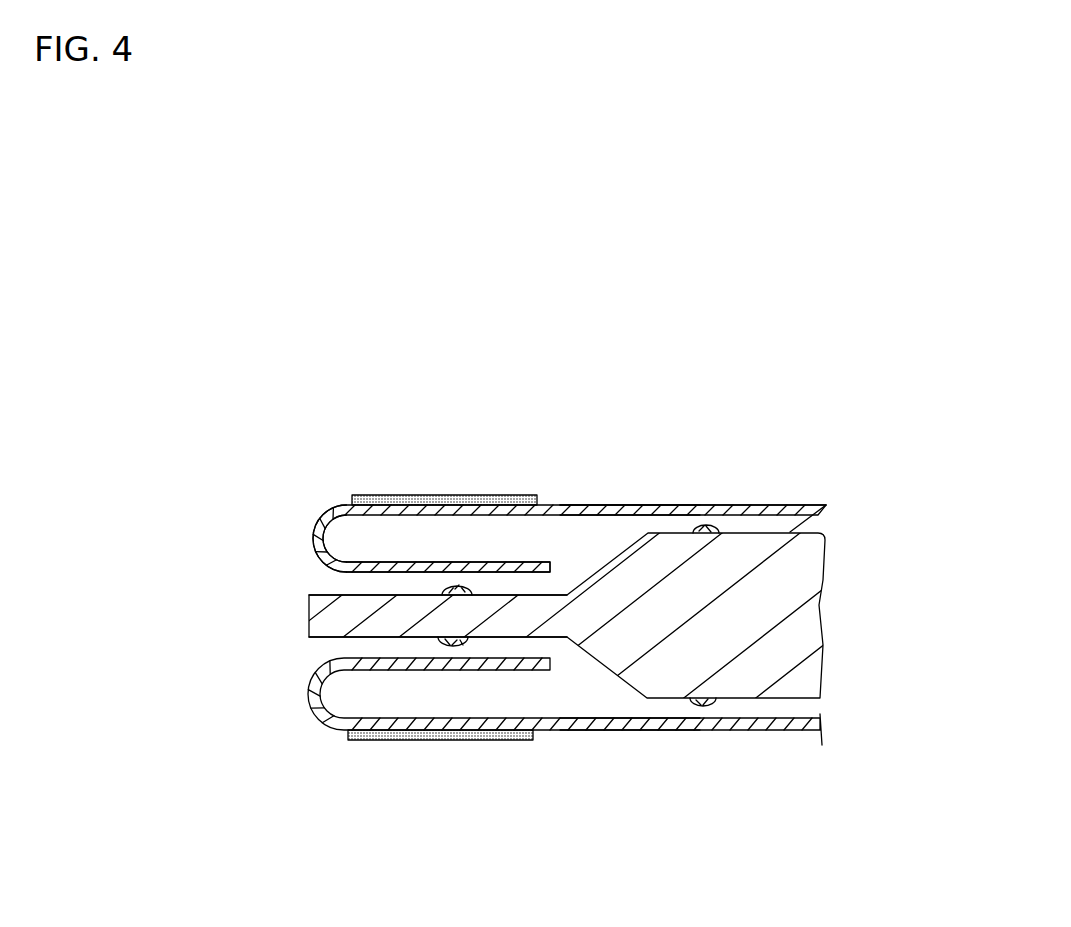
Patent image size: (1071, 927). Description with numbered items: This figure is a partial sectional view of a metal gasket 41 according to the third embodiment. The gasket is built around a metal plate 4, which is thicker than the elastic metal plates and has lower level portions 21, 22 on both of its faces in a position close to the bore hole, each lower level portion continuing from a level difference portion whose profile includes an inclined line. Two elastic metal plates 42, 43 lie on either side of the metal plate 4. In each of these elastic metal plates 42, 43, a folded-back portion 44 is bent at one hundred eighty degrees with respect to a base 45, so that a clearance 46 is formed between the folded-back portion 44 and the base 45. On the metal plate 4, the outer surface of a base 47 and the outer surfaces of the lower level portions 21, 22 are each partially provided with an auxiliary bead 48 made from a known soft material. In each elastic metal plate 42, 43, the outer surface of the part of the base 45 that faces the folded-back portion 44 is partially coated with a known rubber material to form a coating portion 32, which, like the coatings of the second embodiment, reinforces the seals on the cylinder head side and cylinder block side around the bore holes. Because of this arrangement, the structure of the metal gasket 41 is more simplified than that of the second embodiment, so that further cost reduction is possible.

The metal plate 4 is at (792, 672).
The lower level portion 21 is at (330, 592).
The lower level portion 22 is at (333, 640).
The coating portion 32 is at (440, 495).
The metal gasket 41 is at (705, 426).
The elastic metal plate 42 is at (766, 505).
The elastic metal plate 43 is at (752, 731).
The folded-back portion 44 is at (520, 560).
The base 45 is at (620, 505).
The clearance 46 is at (363, 543).
The base 47 is at (828, 504).
The auxiliary bead 48 is at (462, 590).